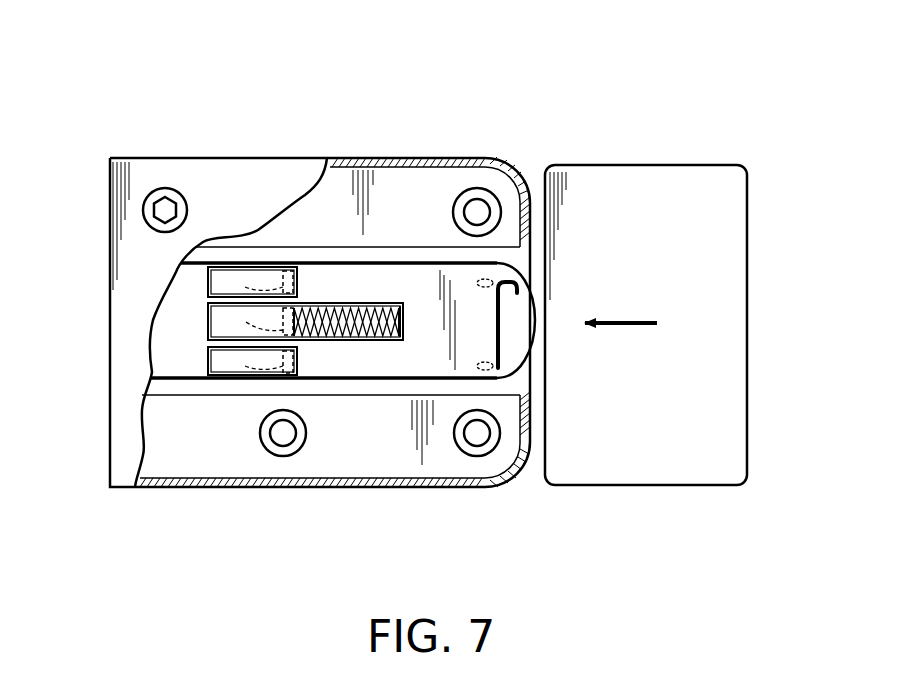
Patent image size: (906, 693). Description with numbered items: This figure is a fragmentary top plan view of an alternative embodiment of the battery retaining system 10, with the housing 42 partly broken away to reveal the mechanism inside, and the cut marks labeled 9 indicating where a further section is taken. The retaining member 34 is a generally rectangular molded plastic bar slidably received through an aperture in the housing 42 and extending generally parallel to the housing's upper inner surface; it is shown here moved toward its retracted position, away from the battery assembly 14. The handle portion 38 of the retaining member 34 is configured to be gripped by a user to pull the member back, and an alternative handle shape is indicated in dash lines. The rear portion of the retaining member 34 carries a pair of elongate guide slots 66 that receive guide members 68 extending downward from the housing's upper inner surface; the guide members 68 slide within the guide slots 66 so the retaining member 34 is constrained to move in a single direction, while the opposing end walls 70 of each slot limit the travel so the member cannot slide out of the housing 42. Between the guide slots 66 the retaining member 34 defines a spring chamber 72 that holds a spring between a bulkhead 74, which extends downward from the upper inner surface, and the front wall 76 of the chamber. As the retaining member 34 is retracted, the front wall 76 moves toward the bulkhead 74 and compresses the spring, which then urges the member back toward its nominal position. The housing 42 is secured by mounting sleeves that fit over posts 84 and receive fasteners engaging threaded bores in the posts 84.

The section line 9- 9 is at (187, 60).
The battery retaining system 10 is at (462, 105).
The battery assembly 14 is at (750, 410).
The retaining member 34 is at (540, 287).
The handle portion 38 is at (502, 328).
The housing 42 is at (147, 158).
The guide slots 66 is at (257, 275).
The guide members 68 is at (254, 325).
The end walls 70 is at (208, 285).
The spring chamber 72 is at (343, 301).
The bulkhead 74 is at (305, 321).
The front wall 76 is at (403, 330).
The posts 84 is at (487, 203).